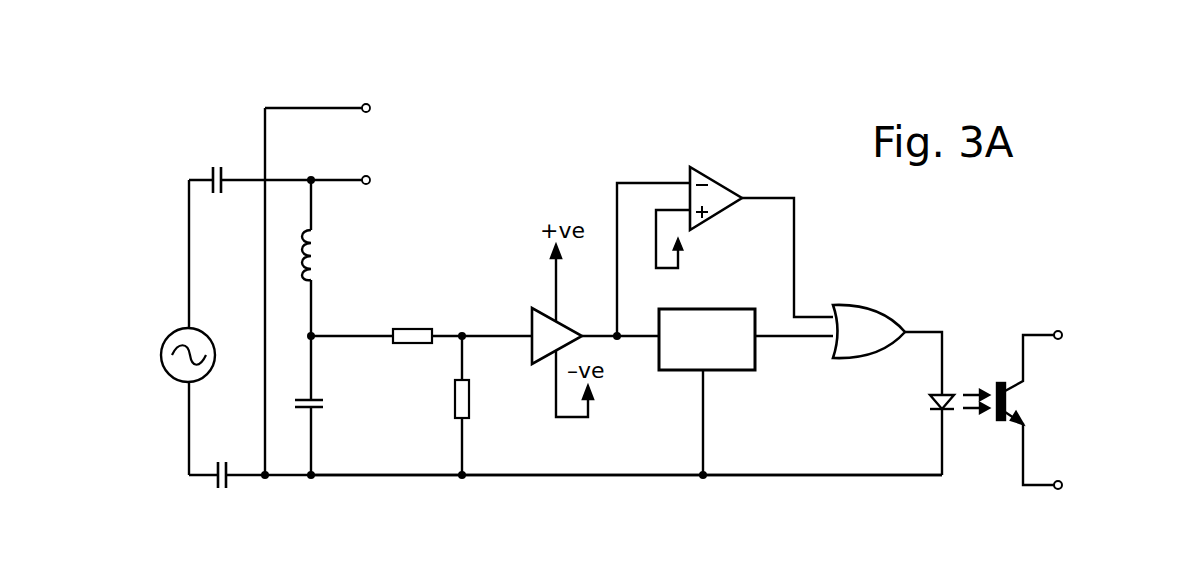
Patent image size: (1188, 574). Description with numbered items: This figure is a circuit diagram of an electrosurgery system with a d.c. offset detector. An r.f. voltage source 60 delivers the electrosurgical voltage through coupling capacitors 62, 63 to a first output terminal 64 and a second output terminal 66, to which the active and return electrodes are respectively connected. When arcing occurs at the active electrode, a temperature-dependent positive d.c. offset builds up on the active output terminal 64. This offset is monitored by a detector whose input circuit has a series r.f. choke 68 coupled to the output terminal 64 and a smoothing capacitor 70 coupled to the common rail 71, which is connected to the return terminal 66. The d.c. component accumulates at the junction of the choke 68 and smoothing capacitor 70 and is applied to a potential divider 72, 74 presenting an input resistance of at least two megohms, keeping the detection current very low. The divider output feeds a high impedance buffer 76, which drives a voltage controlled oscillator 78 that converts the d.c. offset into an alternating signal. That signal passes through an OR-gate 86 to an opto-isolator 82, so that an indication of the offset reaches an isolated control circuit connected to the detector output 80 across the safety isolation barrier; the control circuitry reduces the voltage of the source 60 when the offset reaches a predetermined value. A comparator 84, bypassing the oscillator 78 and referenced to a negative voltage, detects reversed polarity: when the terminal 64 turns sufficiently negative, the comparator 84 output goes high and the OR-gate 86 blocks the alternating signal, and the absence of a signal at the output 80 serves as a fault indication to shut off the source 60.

The r.f. voltage source 60 is at (200, 378).
The coupling capacitor 62 is at (213, 165).
The coupling capacitor 63 is at (227, 488).
The first output terminal 64 is at (367, 186).
The second output terminal 66 is at (369, 104).
The r.f. choke 68 is at (320, 262).
The smoothing capacitor 70 is at (323, 405).
The common rail 71 is at (626, 478).
The potential divider 72 is at (410, 328).
The potential divider 74 is at (469, 400).
The high impedance buffer 76 is at (566, 320).
The voltage controlled oscillator 78 is at (738, 372).
The output 80 is at (1064, 362).
The opto-isolator 82 is at (995, 338).
The comparator 84 is at (728, 185).
The OR-gate 86 is at (882, 320).